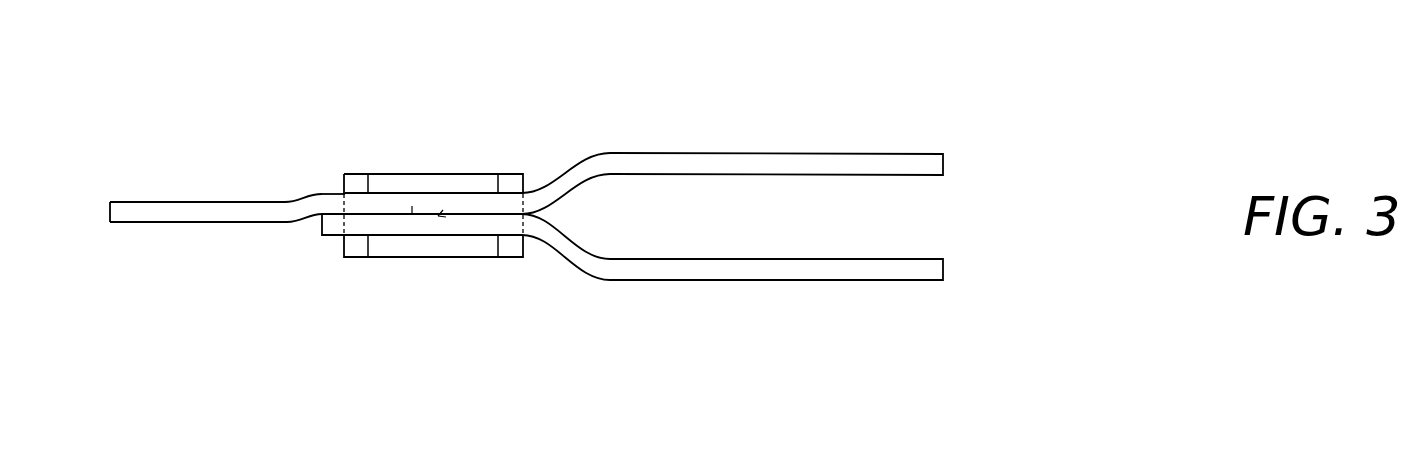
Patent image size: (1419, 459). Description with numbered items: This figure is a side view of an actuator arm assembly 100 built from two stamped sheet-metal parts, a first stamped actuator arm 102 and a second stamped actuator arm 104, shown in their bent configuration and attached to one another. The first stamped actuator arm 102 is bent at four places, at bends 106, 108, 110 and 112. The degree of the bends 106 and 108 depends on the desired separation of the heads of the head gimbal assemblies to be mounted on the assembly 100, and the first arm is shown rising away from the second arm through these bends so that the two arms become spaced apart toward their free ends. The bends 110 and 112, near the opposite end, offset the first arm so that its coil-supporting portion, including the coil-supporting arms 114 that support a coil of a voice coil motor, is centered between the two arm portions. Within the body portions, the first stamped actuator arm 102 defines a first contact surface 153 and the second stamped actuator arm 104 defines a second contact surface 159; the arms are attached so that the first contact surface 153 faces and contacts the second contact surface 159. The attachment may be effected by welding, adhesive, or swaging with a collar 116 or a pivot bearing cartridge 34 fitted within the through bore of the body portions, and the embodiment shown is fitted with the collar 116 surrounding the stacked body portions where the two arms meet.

The actuator arm assembly 100 is at (1057, 216).
The first stamped actuator arm 102 is at (905, 153).
The second stamped actuator arm 104 is at (909, 258).
The bend 106 is at (598, 151).
The bend 108 is at (530, 192).
The bend 110 is at (308, 191).
The bend 112 is at (283, 200).
The coil-supporting arms 114 is at (123, 201).
The first contact surface 153 is at (438, 216).
The second contact surface 159 is at (412, 212).
The pivot bearing cartridge 34 is at (453, 253).
The collar 116 is at (498, 259).